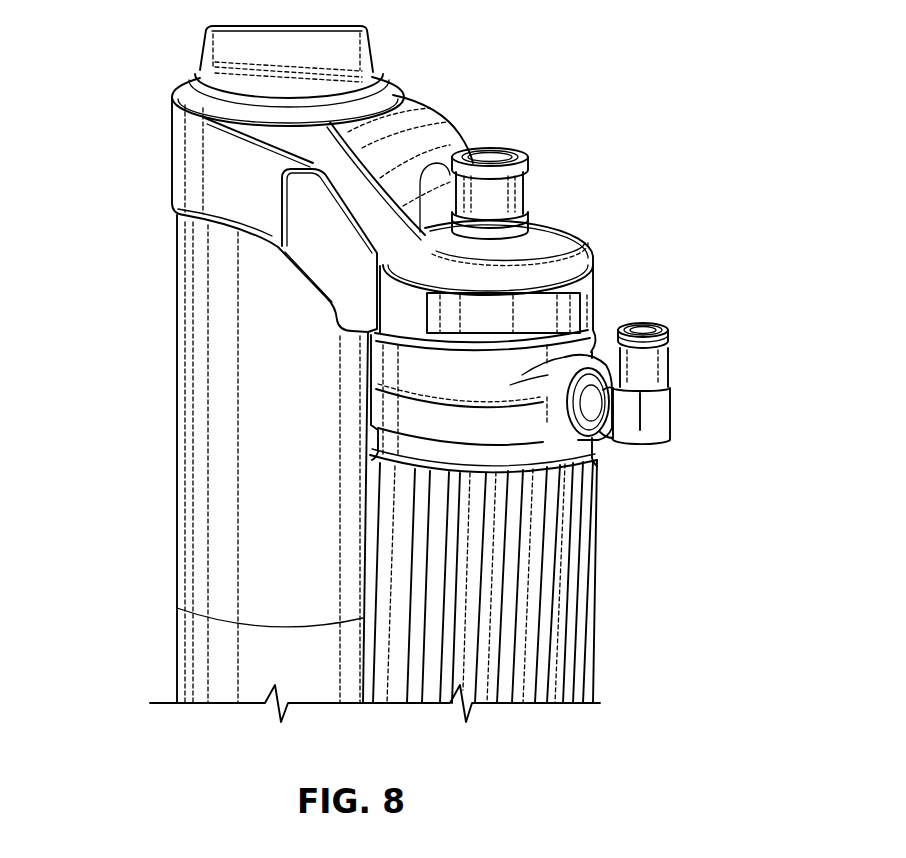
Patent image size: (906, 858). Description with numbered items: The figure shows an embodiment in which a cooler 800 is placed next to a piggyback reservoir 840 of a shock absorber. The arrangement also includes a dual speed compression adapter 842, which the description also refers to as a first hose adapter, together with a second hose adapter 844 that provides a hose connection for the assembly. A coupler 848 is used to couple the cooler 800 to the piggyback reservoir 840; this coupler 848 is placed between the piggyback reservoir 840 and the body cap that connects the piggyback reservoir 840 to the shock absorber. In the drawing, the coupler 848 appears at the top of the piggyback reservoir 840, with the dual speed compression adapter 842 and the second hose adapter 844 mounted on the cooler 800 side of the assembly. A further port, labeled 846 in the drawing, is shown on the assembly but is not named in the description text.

The cooler 800 is at (507, 629).
The piggyback reservoir 840 is at (212, 632).
The dual speed compression (DSC) adapter 842 is at (532, 432).
The second hose adapter 844 is at (653, 362).
The outlet port 846 is at (513, 176).
The coupler 848 is at (197, 172).